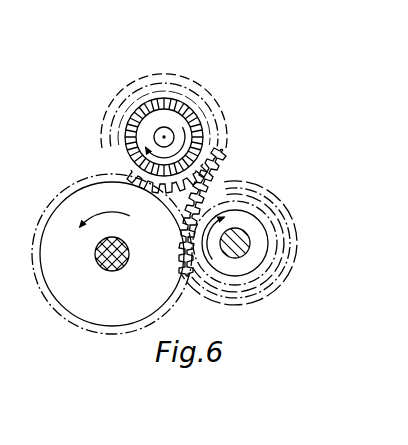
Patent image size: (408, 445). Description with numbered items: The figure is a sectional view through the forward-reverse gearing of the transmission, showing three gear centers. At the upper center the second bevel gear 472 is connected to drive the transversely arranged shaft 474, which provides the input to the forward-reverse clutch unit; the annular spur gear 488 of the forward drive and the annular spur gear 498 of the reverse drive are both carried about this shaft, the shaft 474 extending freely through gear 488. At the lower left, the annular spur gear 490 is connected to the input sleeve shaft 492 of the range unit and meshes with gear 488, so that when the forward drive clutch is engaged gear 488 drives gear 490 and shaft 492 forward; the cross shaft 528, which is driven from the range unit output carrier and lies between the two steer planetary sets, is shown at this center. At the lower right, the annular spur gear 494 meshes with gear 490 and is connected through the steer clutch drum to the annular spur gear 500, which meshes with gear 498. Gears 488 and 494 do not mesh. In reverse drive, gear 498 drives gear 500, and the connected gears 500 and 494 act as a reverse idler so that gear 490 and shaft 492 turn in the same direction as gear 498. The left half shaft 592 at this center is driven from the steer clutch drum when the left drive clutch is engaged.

The second bevel gear 472 is at (197, 115).
The transversely arranged shaft 474 is at (165, 135).
The annular spur gear 488 is at (126, 172).
The annular spur gear 490 is at (116, 188).
The input sleeve shaft 492 is at (96, 258).
The annular spur gear 494 is at (198, 268).
The annular spur gear 498 is at (225, 158).
The annular spur gear 500 is at (233, 178).
The cross shaft 528 is at (126, 266).
The left half shaft 592 is at (249, 239).